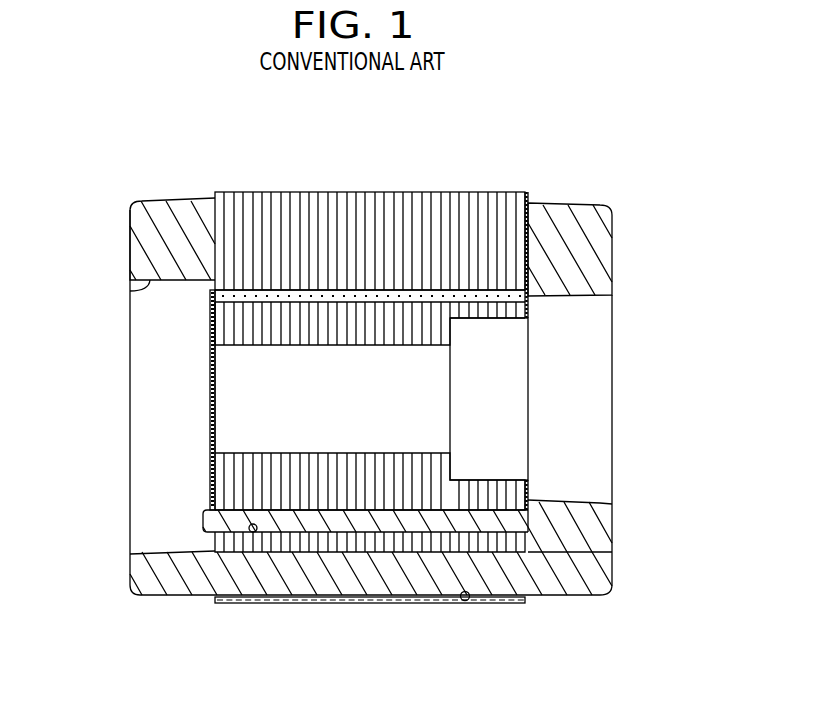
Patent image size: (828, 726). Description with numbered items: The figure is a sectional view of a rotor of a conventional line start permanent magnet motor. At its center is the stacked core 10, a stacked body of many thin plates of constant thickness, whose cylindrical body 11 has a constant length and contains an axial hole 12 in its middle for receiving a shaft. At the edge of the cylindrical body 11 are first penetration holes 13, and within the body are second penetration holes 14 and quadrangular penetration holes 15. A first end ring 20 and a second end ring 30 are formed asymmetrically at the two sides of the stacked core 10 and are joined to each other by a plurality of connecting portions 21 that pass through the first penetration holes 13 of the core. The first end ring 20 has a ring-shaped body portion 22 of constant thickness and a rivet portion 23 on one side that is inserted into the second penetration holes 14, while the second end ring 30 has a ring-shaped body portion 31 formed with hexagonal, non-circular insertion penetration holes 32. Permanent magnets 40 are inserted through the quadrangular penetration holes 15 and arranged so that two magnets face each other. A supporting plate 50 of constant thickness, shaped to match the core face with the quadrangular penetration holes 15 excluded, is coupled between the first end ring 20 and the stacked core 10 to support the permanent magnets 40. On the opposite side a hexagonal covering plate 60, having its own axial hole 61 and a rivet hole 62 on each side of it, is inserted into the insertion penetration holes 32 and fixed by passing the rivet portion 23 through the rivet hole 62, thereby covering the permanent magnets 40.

The stacked core 10 is at (243, 189).
The cylindrical body 11 is at (428, 215).
The axial hole 12 is at (420, 346).
The first penetration holes 13 is at (467, 601).
The second penetration holes 14 is at (253, 532).
The quadrangular penetration holes 15 is at (212, 327).
The first end ring 20 is at (624, 262).
The connecting portions 21 is at (430, 572).
The ring-shaped body portion 22 is at (576, 228).
The rivet portion 23 is at (333, 520).
The second end ring 30 is at (141, 196).
The ring-shaped body portion 31 is at (160, 207).
The insertion penetration holes 32 is at (140, 288).
The permanent magnets 40 is at (350, 290).
The supporting plate 50 is at (536, 316).
The covering plate 60 is at (210, 478).
The axial hole 61 is at (212, 408).
The rivet hole 62 is at (204, 525).